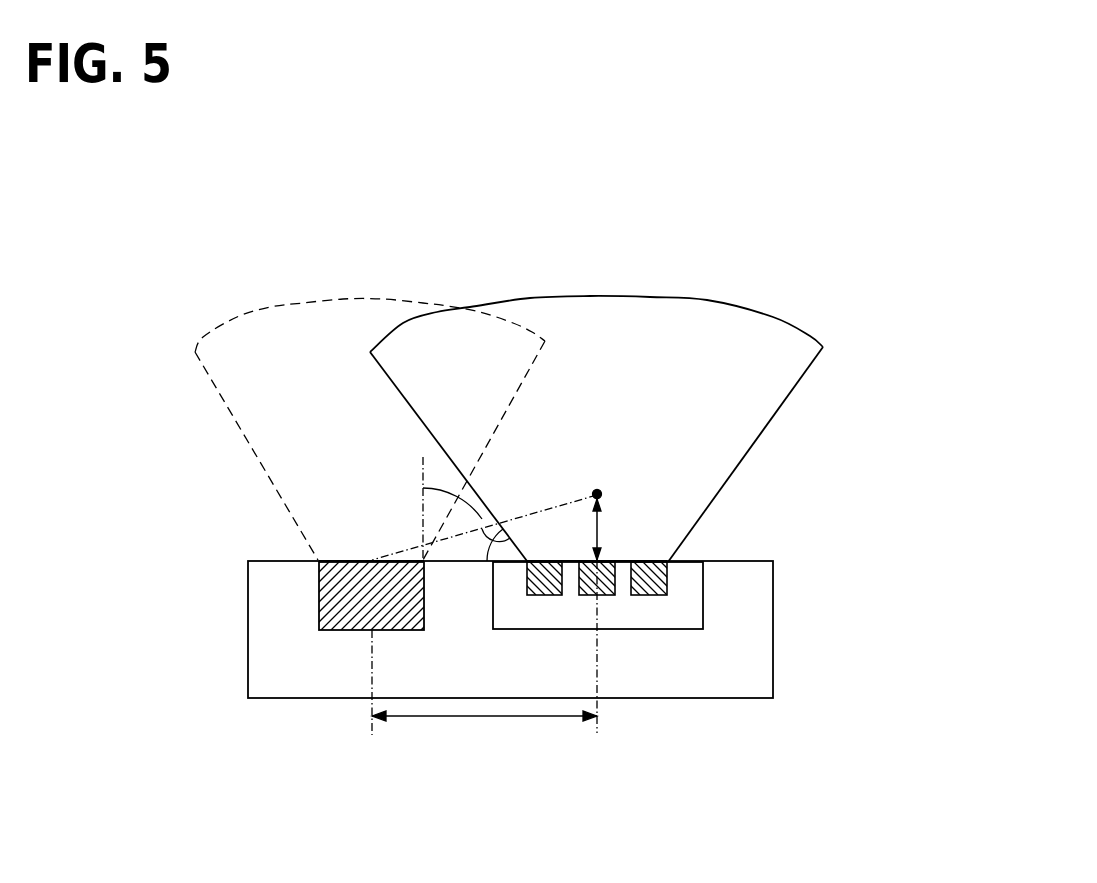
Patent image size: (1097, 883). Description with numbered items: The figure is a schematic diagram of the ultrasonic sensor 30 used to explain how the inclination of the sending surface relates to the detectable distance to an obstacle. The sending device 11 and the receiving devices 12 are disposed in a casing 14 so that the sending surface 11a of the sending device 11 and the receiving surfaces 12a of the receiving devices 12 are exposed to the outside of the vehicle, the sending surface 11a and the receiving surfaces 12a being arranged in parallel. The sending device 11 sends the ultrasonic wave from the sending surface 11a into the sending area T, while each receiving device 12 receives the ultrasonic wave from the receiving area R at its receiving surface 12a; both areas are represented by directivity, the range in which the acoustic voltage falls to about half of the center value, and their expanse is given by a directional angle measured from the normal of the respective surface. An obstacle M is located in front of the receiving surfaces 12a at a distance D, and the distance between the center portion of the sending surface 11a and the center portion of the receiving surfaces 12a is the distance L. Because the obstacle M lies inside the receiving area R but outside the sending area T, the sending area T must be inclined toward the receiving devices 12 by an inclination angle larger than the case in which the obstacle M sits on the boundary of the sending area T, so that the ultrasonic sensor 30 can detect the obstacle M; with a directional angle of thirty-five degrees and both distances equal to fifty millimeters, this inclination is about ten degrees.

The ultrasonic sensor 30 is at (676, 189).
The casing 14 is at (773, 625).
The sending device 11 is at (337, 615).
The receiving device 12 is at (608, 588).
The sending surface 11a is at (353, 560).
The receiving surface 12a is at (605, 560).
The sending area T is at (252, 308).
The receiving area R is at (727, 302).
The obstacle M is at (598, 490).
The distance D is at (600, 528).
The distance L is at (484, 665).